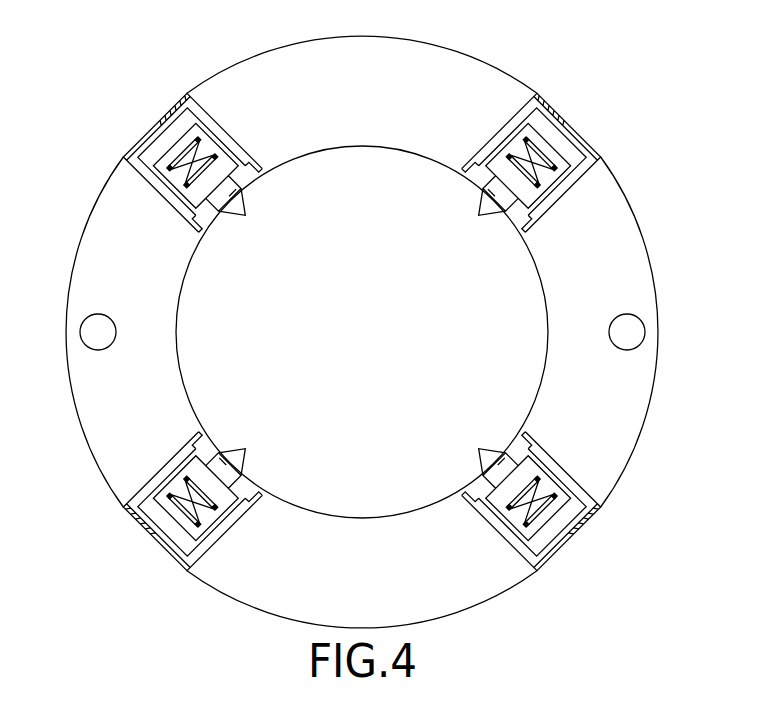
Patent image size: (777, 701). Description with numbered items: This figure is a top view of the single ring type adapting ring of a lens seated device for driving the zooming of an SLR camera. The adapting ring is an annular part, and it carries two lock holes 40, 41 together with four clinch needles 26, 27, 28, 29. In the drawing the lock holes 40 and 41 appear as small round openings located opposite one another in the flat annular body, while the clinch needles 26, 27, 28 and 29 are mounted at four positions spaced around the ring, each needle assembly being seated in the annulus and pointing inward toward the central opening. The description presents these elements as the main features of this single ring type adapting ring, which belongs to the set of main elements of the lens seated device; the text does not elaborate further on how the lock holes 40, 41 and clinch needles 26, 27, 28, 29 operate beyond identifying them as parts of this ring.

The clinch needle 26 is at (218, 453).
The clinch needle 27 is at (196, 229).
The clinch needle 28 is at (506, 453).
The clinch needle 29 is at (527, 229).
The lock hole 40 is at (85, 344).
The lock hole 41 is at (640, 344).